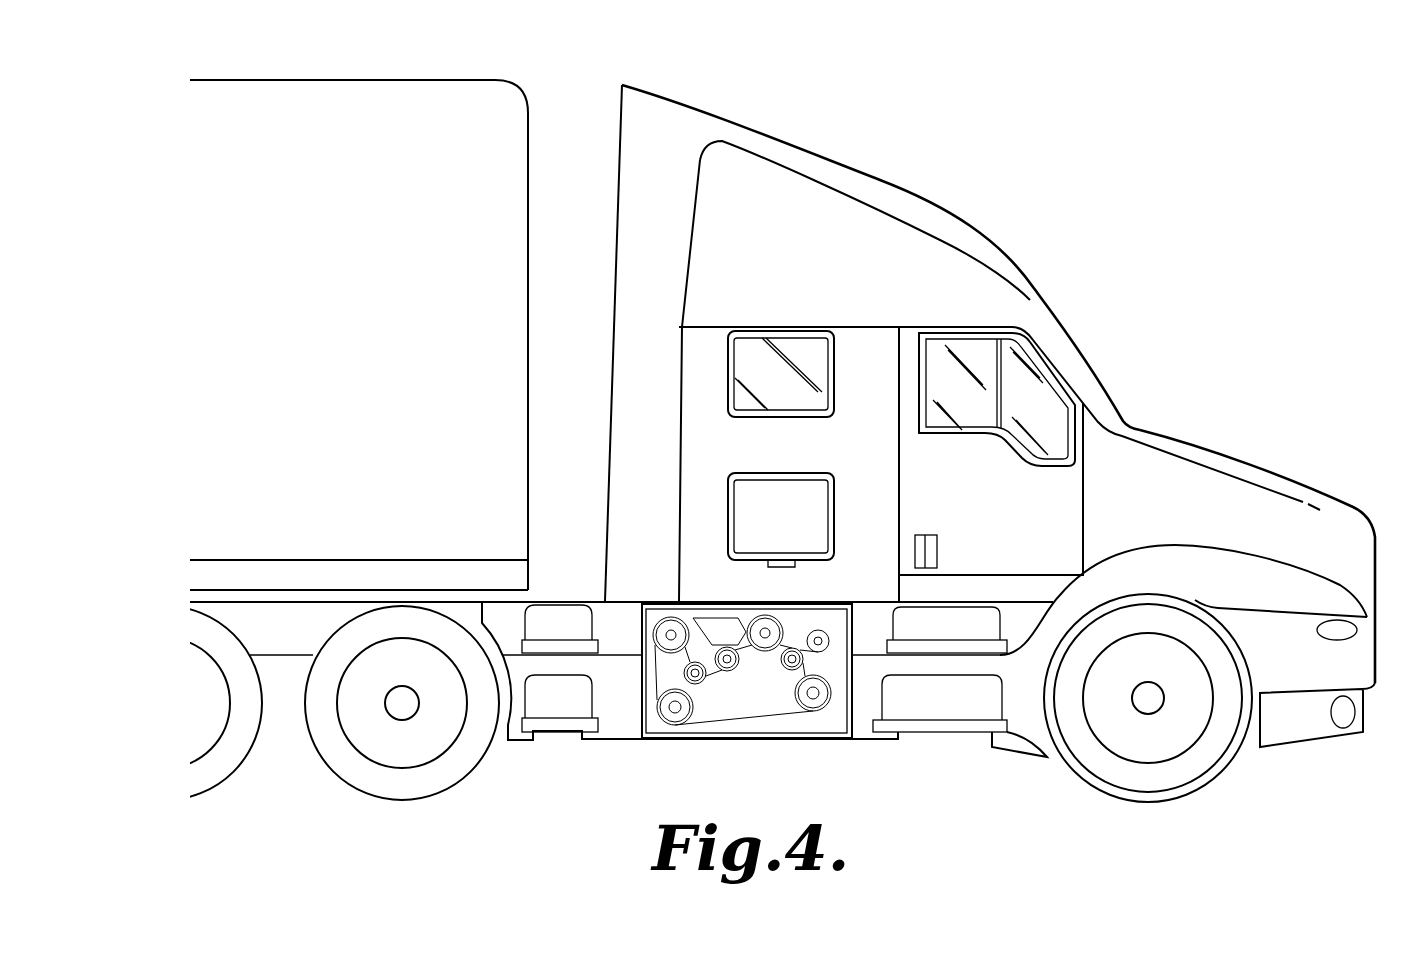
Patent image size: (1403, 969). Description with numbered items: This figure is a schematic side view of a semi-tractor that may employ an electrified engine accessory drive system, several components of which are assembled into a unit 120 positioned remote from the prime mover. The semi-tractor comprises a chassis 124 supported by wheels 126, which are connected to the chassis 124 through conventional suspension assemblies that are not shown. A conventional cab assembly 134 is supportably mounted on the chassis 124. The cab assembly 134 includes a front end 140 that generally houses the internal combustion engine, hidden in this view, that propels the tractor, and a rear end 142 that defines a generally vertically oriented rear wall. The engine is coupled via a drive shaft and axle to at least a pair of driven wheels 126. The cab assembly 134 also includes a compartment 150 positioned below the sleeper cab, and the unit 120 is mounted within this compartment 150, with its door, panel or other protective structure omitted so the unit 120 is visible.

The unit 120 is at (634, 706).
The chassis 124 is at (280, 652).
The wheels 126 is at (212, 782).
The cab assembly 134 is at (1031, 244).
The front end 140 is at (1333, 502).
The rear end 142 is at (678, 388).
The compartment 150 is at (850, 712).